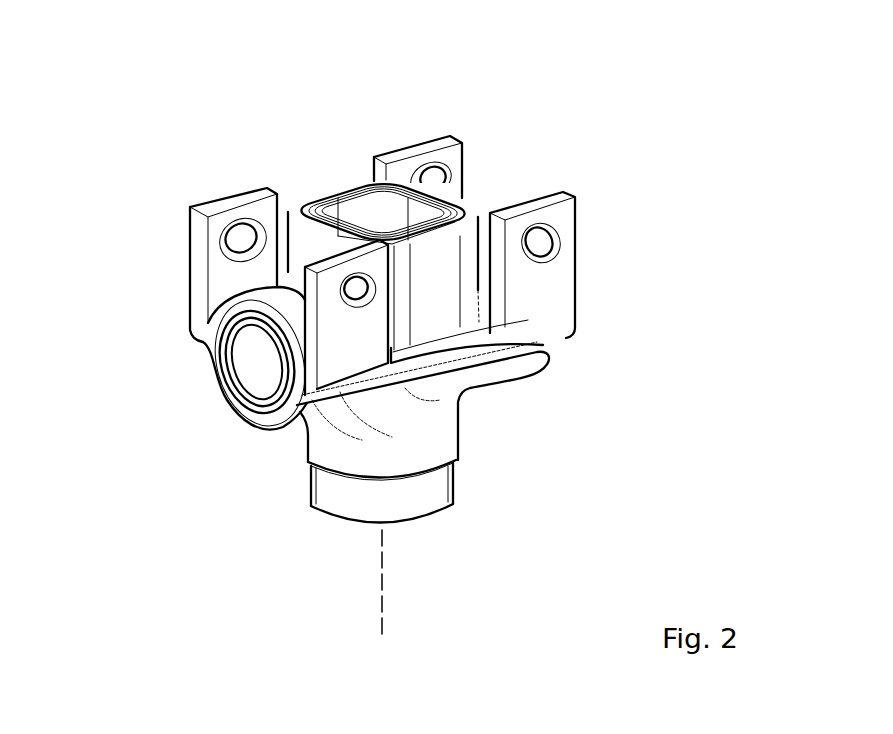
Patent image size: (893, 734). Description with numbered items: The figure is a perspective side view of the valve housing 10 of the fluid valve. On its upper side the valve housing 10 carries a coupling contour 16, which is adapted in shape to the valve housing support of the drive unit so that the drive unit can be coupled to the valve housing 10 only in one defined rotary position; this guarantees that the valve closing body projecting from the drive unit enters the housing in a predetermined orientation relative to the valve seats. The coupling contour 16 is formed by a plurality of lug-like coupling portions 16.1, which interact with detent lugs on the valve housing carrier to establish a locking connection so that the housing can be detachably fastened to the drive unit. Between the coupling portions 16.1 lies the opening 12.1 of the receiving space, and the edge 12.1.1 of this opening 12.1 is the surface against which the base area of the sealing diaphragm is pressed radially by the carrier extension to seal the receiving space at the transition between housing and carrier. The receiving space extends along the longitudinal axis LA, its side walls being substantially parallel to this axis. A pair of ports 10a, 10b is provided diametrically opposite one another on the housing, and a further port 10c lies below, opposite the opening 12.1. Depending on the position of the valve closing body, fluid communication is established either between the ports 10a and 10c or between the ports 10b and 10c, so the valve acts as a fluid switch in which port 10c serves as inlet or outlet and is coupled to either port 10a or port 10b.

The valve housing 10 is at (413, 314).
The port 10a is at (234, 393).
The port 10b is at (575, 360).
The port 10c is at (440, 536).
The opening of the receiving space 12.1 is at (366, 220).
The edge of the opening 12.1.1 is at (375, 225).
The coupling contour 16 is at (390, 265).
The lug-like coupling portions 16.1 is at (222, 205).
The longitudinal axis LA is at (403, 584).